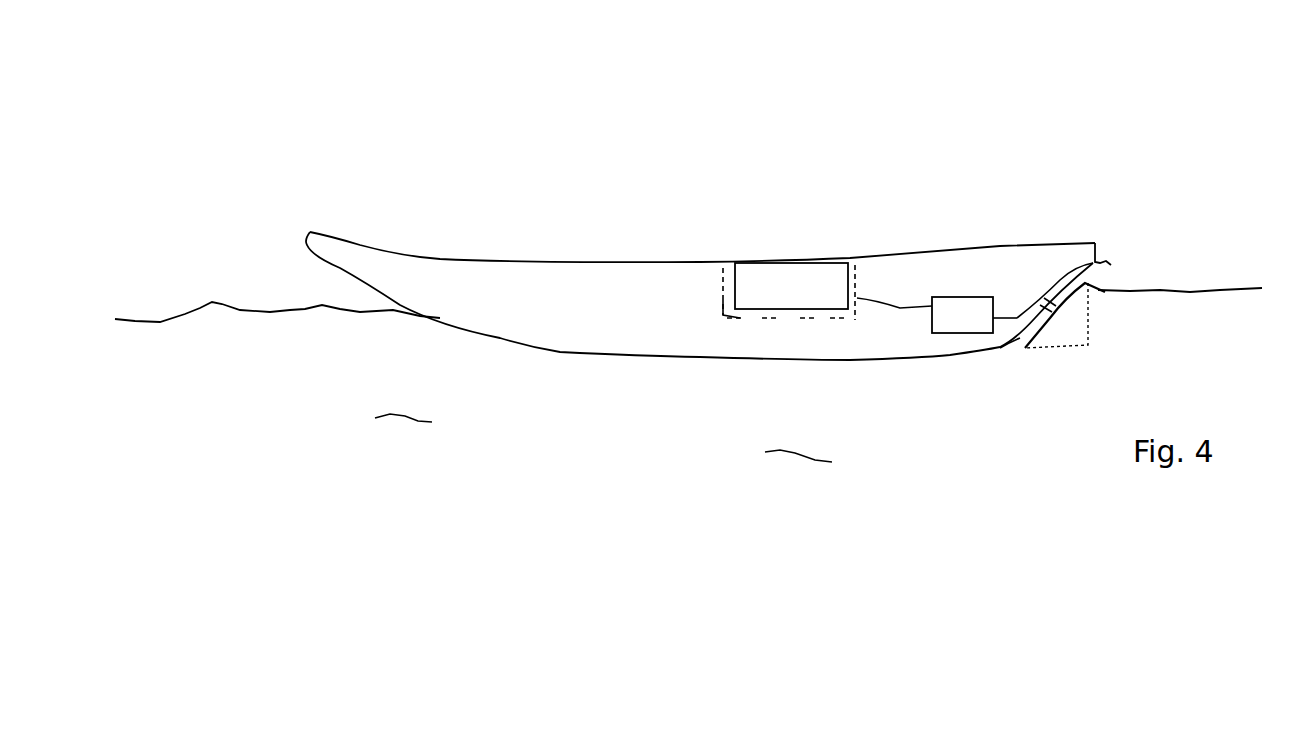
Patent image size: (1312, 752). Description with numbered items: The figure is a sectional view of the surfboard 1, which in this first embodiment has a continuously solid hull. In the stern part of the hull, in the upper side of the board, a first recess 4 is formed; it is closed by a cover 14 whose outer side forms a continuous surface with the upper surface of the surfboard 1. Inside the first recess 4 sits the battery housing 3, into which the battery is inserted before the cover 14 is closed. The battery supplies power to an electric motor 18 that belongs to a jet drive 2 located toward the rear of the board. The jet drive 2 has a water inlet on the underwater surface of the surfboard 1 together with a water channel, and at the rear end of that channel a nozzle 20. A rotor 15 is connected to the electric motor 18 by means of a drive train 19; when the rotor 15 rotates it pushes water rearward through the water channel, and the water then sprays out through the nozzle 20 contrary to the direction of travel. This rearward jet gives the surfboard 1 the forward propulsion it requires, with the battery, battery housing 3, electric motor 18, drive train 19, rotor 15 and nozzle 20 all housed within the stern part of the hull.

The surfboard 1 is at (490, 300).
The jet drive 2 is at (1009, 356).
The battery housing 3 is at (820, 286).
The first recess 4 is at (725, 313).
The cover 14 is at (771, 258).
The rotor 15 is at (1047, 316).
The electric motor 18 is at (955, 310).
The drive train 19 is at (1017, 318).
The nozzle 20 is at (1107, 272).